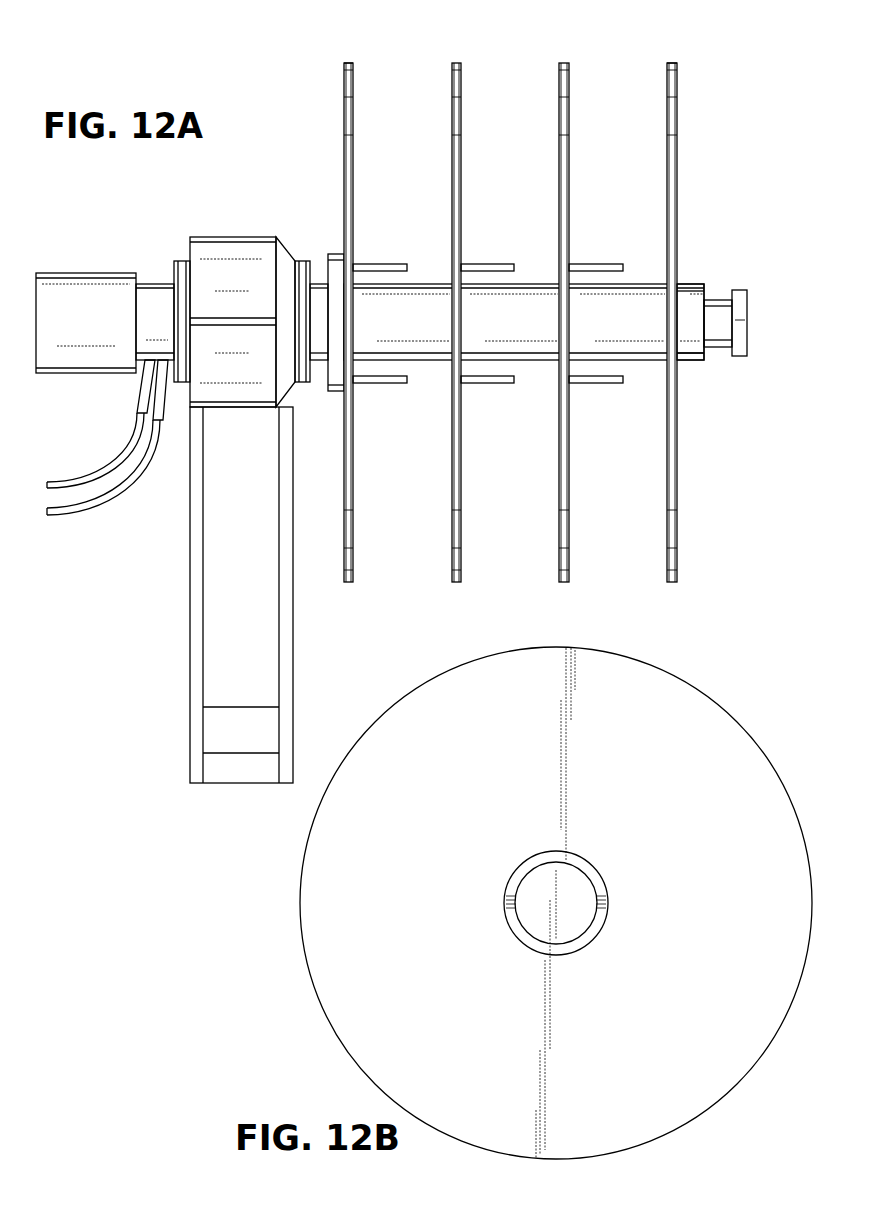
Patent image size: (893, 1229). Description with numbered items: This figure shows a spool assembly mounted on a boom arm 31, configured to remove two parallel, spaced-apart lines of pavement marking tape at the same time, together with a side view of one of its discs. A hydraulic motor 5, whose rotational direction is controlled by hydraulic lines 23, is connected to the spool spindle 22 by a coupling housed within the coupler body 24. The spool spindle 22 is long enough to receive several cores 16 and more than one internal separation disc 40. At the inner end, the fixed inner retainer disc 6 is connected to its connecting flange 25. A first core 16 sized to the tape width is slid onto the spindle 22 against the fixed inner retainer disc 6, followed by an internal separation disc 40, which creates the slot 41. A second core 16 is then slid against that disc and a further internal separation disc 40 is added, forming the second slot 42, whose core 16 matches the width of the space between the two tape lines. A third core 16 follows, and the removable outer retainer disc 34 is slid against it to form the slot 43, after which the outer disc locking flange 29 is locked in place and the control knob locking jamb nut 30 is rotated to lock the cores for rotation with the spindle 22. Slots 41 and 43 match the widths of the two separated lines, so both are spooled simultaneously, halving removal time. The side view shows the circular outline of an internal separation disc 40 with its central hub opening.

In FIG. 12A, the hydraulic motor 5 is at (108, 273).
In FIG. 12A, the fixed inner retainer disc 6 is at (345, 100).
In FIG. 12A, the core 16 is at (370, 264).
In FIG. 12A, the spool spindle 22 is at (428, 318).
In FIG. 12A, the hydraulic lines 23 is at (70, 508).
In FIG. 12A, the coupler body 24 is at (232, 237).
In FIG. 12A, the connecting flange 25 is at (338, 254).
In FIG. 12A, the outer disc locking flange 29 is at (690, 284).
In FIG. 12A, the control knob locking jamb nut 30 is at (718, 300).
In FIG. 12A, the boom arm 31 is at (222, 633).
In FIG. 12A, the removable outer retainer disc 34 is at (677, 148).
In FIG. 12A, the internal separation disc 40 is at (353, 462).
In FIG. 12B, the internal separation disc 40 is at (662, 713).
In FIG. 12A, the slot 41 is at (406, 78).
In FIG. 12A, the second slot 42 is at (517, 78).
In FIG. 12A, the slot 43 is at (632, 78).